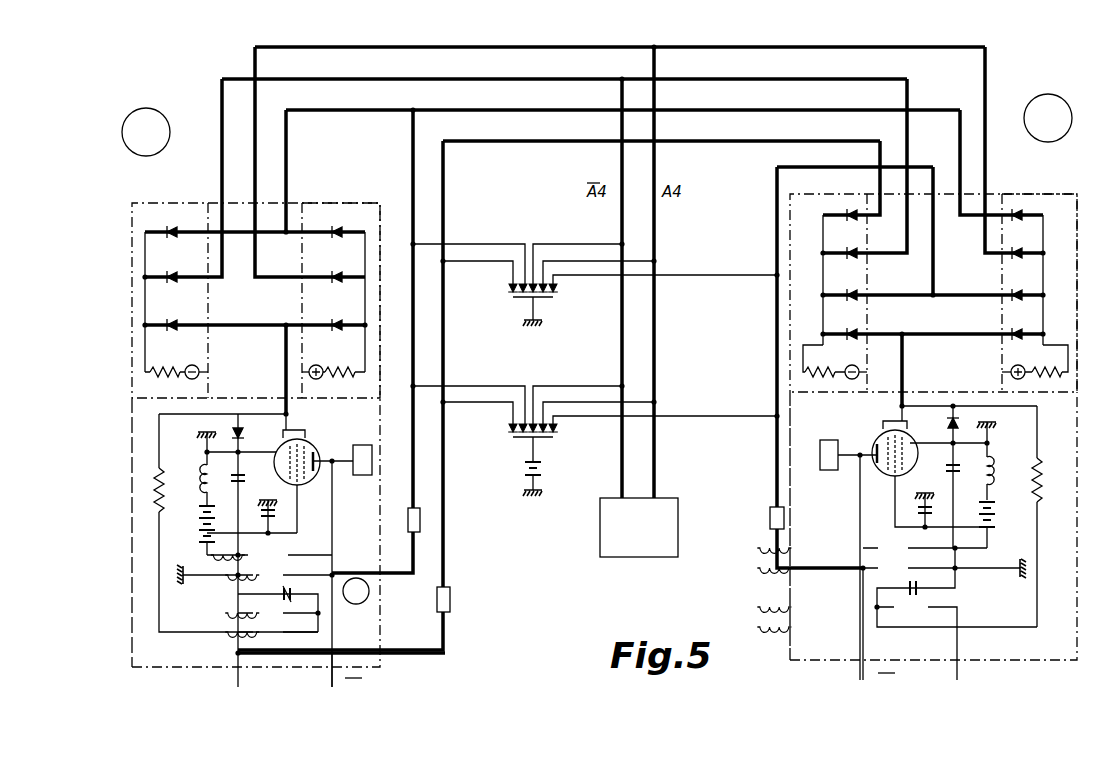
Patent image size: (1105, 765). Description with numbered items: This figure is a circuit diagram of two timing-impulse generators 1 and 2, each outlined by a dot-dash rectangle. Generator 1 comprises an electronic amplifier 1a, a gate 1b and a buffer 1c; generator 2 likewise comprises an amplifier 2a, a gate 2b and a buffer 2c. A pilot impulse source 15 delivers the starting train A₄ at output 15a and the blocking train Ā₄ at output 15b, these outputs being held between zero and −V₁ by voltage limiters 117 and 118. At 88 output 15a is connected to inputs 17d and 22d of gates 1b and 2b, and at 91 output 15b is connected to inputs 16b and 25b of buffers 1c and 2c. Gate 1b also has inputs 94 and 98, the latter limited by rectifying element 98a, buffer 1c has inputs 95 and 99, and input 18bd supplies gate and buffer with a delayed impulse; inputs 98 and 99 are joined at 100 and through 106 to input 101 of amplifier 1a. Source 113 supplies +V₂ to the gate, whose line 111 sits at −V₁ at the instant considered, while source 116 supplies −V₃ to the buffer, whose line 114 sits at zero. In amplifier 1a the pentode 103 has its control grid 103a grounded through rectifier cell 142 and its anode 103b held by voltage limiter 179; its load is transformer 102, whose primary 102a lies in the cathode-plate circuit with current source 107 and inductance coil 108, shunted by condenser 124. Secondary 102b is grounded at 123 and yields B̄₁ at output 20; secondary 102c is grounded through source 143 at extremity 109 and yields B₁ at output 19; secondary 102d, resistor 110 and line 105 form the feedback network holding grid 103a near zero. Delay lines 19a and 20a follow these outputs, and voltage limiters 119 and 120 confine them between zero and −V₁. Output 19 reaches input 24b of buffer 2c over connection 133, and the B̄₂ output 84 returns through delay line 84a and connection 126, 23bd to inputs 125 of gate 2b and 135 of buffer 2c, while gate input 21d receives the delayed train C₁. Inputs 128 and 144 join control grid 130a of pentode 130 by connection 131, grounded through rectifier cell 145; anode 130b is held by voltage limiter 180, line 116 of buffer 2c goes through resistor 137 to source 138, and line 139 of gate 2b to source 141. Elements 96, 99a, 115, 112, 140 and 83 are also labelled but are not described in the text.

The generator 1 is at (165, 203).
The electronic amplifier 1a is at (131, 614).
The gate 1b is at (352, 199).
The buffer 1c is at (130, 203).
The generator 2 is at (1030, 194).
The electronic amplifier 2a is at (792, 607).
The gate 2b is at (1060, 196).
The buffer 2c is at (789, 300).
The connection 88 is at (654, 49).
The connection 91 is at (614, 83).
The input 18bd is at (404, 114).
The connection 133 is at (445, 152).
The connection 23bd is at (775, 185).
The pilot impulse source 15 is at (613, 548).
The output 15a is at (657, 473).
The output 15b is at (620, 473).
The input 17d is at (297, 274).
The input 16b is at (220, 282).
The input 94 is at (297, 228).
The input 95 is at (215, 228).
The junction line 96 is at (286, 228).
The buffer line 114 is at (145, 257).
The gate line 111 is at (358, 294).
The input 99 is at (217, 325).
The diode 99a is at (173, 322).
The input 98 is at (293, 322).
The rectifying element 98a is at (332, 328).
The connection 100 is at (285, 328).
The input 101 is at (285, 396).
The resistor 115 is at (163, 379).
The source 116 is at (192, 379).
The resistor 112 is at (350, 379).
The source 113 is at (316, 379).
The connection 106 is at (288, 415).
The resistor 110 is at (153, 493).
The rectifier cell 142 is at (212, 430).
The connection 105 is at (242, 425).
The condenser 124 is at (241, 474).
The inductance coil 108 is at (203, 473).
The continuous current source 107 is at (203, 512).
The pentode 103 is at (300, 488).
The control grid 103a is at (288, 437).
The anode 103b is at (320, 444).
The voltage limiter 179 is at (358, 475).
The primary winding 102a is at (292, 552).
The first secondary winding 102b is at (303, 569).
The second secondary winding 102c is at (255, 627).
The third secondary winding 102d is at (293, 637).
The transformer 102 is at (356, 591).
The ground connection 123 is at (207, 580).
The source 143 is at (280, 598).
The extremity 109 is at (321, 615).
The output 19 is at (238, 670).
The output 20 is at (333, 670).
The delay line 19a is at (453, 598).
The delay line 20a is at (423, 520).
The voltage limiter 119 is at (510, 288).
The voltage limiter 118 is at (553, 297).
The voltage limiter 120 is at (512, 428).
The voltage limiter 117 is at (557, 437).
The input 24b is at (872, 212).
The input 21d is at (992, 212).
The input 25b is at (865, 252).
The input 22d is at (993, 256).
The gate line 139 is at (1047, 258).
The input 135 is at (868, 293).
The input 125 is at (1000, 298).
The connection 126 is at (937, 293).
The input 144 is at (868, 333).
The input 128 is at (975, 336).
The connection 131 is at (907, 373).
The resistor 137 is at (825, 390).
The source 138 is at (867, 373).
The resistor 140 is at (1055, 387).
The source 141 is at (1005, 373).
The rectifier cell 145 is at (957, 410).
The pentode 130 is at (882, 432).
The control grid 130a is at (907, 468).
The anode 130b is at (872, 462).
The voltage limiter 180 is at (820, 474).
The delay line 84a is at (776, 517).
The output 84 is at (863, 663).
The output terminal B2 83 is at (957, 660).